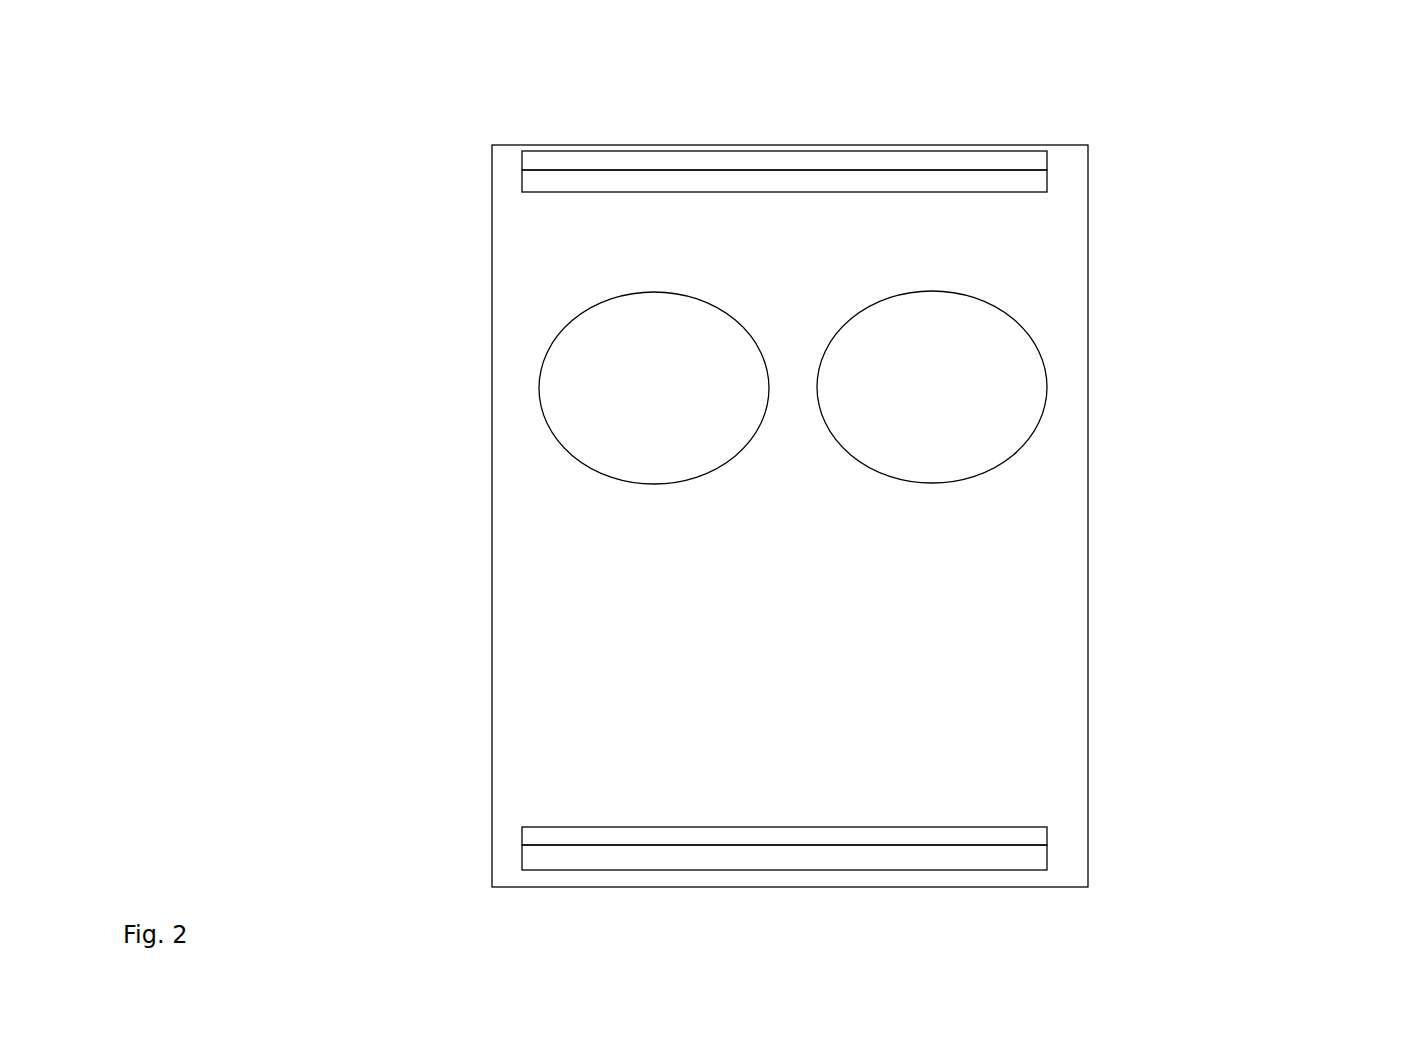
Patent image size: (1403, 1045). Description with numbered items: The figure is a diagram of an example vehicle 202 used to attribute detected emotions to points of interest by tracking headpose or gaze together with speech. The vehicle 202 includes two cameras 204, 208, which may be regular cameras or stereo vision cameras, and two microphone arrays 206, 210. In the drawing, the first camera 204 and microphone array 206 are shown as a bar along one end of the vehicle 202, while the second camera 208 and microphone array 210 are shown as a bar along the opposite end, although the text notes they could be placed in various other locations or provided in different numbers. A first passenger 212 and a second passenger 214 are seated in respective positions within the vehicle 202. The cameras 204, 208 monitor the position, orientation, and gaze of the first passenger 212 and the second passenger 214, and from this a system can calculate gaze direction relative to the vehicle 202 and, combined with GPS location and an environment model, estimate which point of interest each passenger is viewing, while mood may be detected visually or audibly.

The vehicle 202 is at (1088, 233).
The camera 204 is at (668, 152).
The microphone array 206 is at (522, 180).
The camera 208 is at (670, 827).
The microphone array 210 is at (522, 857).
The Passenger 1 212 is at (654, 388).
The Passenger 2 214 is at (932, 387).